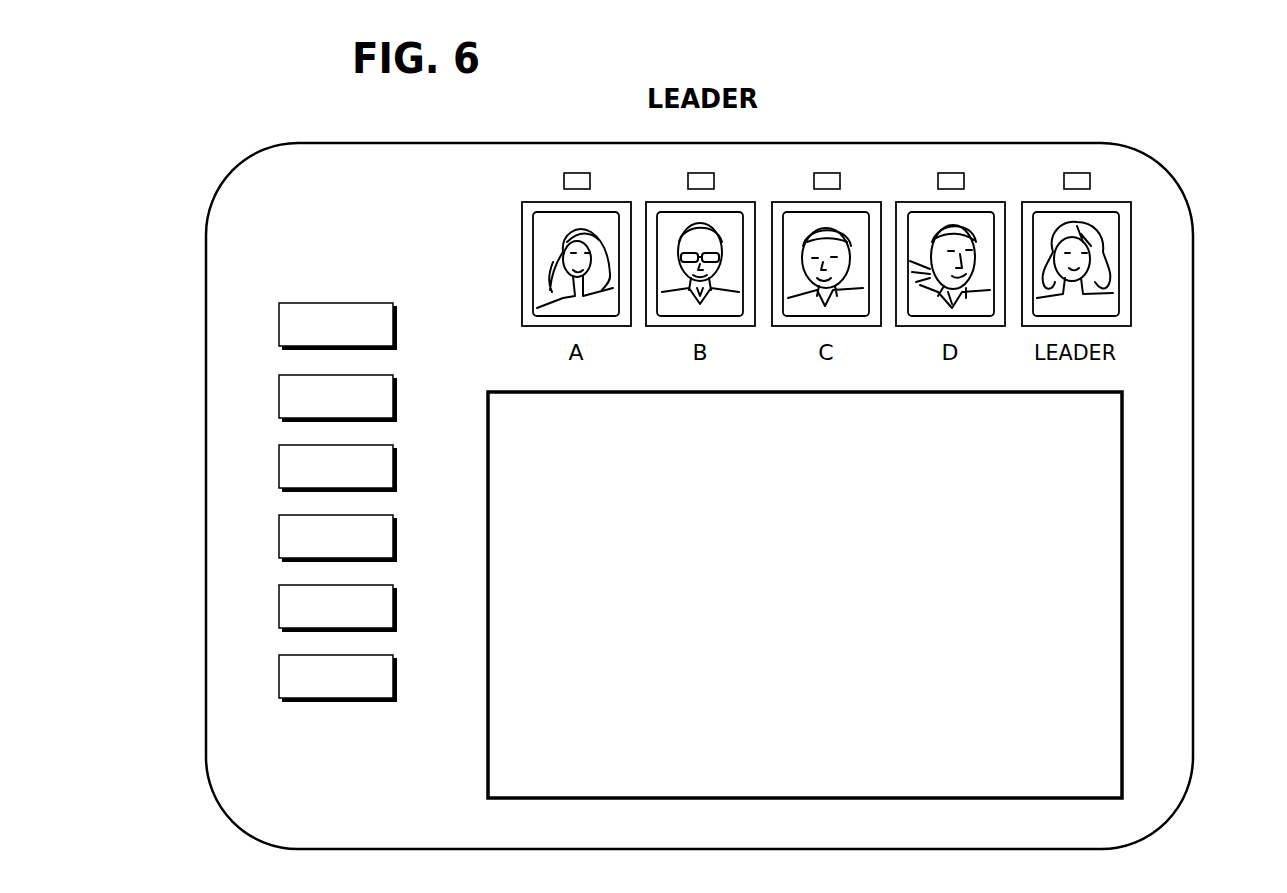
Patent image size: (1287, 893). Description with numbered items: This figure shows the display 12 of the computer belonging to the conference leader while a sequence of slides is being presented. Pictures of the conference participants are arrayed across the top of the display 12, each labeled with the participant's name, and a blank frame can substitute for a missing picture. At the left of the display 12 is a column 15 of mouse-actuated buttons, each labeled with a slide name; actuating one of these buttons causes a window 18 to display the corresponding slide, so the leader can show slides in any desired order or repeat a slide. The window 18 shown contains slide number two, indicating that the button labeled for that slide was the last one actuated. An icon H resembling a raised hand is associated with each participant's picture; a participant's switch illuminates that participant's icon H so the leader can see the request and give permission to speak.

The display 12 is at (1193, 697).
The column of mouse-actuated buttons 15 is at (345, 266).
The window 18 is at (484, 753).
The icon H is at (590, 181).